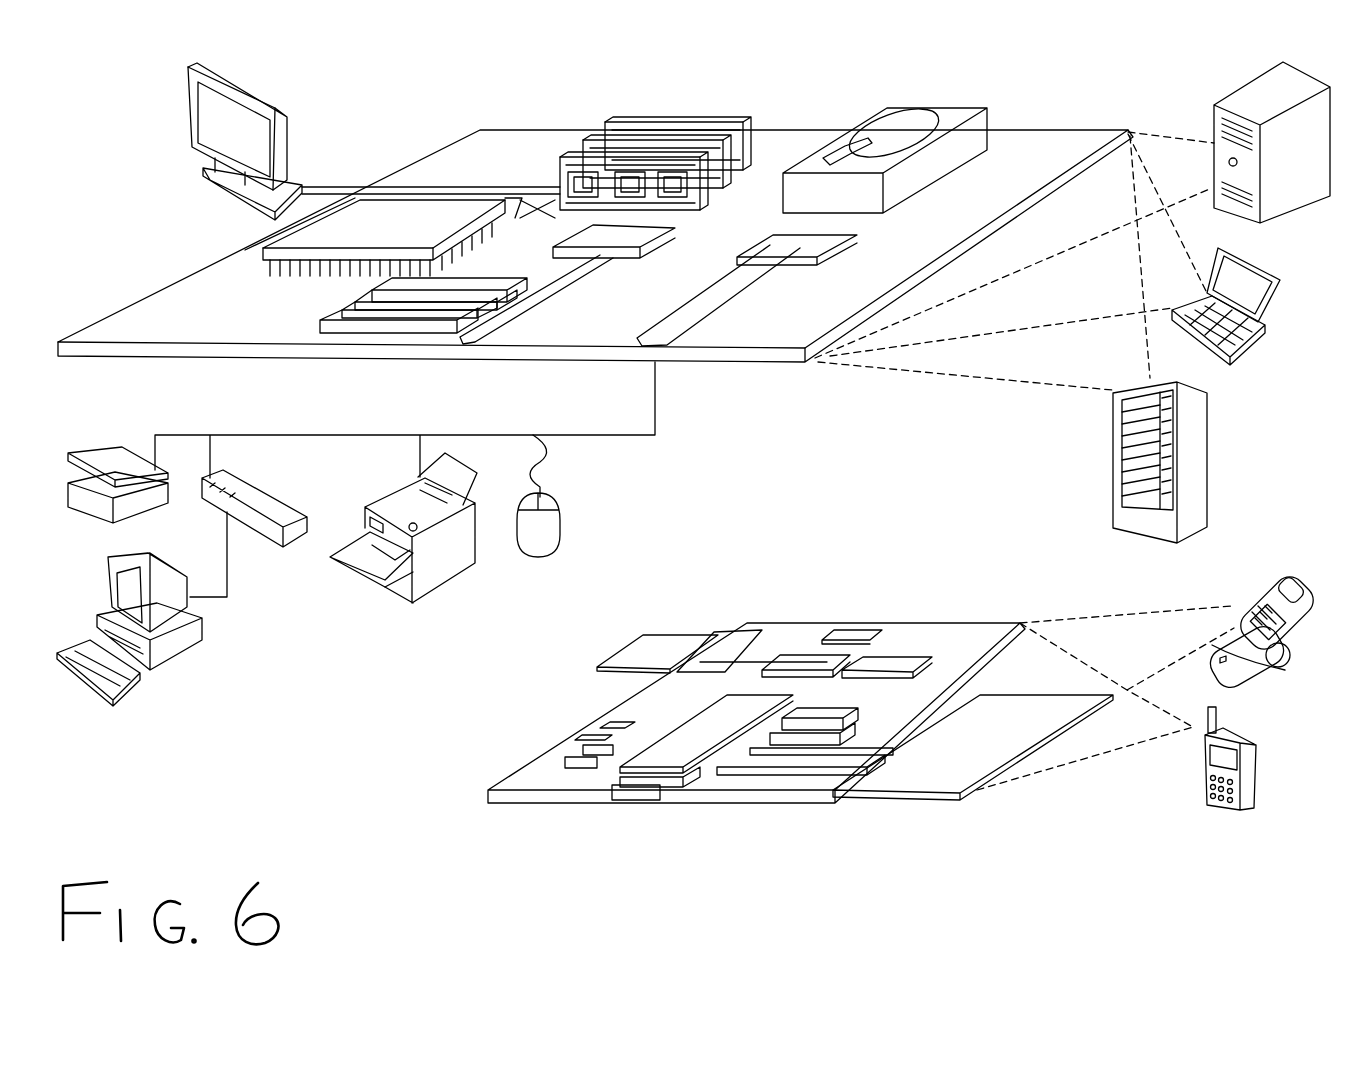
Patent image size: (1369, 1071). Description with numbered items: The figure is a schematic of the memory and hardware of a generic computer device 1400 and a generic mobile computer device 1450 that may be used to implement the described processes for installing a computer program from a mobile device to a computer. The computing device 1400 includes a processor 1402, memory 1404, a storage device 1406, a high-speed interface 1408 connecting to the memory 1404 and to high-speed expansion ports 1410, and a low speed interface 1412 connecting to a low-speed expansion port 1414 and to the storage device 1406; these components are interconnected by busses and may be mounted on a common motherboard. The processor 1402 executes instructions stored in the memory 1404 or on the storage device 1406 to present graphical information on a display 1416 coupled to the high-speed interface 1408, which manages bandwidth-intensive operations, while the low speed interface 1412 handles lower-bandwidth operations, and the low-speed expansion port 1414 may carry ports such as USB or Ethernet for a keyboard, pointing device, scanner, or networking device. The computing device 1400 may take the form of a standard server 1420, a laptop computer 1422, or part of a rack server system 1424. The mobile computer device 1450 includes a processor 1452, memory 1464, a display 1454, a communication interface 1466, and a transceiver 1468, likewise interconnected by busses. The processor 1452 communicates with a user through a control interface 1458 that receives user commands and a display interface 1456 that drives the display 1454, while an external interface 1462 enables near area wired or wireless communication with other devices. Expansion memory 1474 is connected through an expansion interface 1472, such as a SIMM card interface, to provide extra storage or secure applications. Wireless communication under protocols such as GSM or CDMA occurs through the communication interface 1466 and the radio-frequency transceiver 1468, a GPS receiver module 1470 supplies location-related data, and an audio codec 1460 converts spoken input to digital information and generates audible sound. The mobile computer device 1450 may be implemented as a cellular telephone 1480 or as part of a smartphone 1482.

The computing device 1400 is at (394, 97).
The processor 1402 is at (222, 252).
The memory 1404 is at (622, 122).
The storage device 1406 is at (865, 118).
The high-speed interface 1408 is at (521, 195).
The high-speed expansion ports 1410 is at (330, 312).
The low speed interface 1412 is at (768, 245).
The low-speed expansion port 1414 is at (673, 352).
The display 1416 is at (188, 66).
The standard server 1420 is at (1214, 117).
The laptop computer 1422 is at (1278, 278).
The rack server system 1424 is at (1118, 482).
The mobile computer device 1450 is at (464, 798).
The processor 1452 is at (670, 795).
The display 1454 is at (945, 790).
The display interface 1456 is at (752, 775).
The control interface 1458 is at (798, 756).
The audio codec 1460 is at (820, 732).
The external interface 1462 is at (640, 803).
The memory 1464 is at (577, 745).
The communication interface 1466 is at (793, 655).
The transceiver 1468 is at (888, 657).
The GPS receiver module 1470 is at (860, 630).
The expansion interface 1472 is at (728, 640).
The expansion memory 1474 is at (650, 635).
The cellular telephone 1480 is at (1260, 580).
The smartphone 1482 is at (1200, 770).